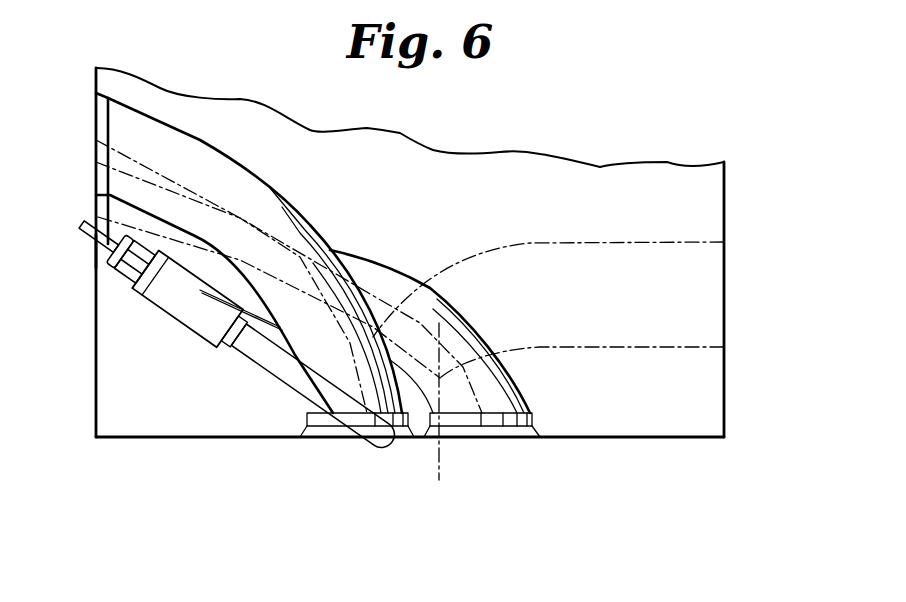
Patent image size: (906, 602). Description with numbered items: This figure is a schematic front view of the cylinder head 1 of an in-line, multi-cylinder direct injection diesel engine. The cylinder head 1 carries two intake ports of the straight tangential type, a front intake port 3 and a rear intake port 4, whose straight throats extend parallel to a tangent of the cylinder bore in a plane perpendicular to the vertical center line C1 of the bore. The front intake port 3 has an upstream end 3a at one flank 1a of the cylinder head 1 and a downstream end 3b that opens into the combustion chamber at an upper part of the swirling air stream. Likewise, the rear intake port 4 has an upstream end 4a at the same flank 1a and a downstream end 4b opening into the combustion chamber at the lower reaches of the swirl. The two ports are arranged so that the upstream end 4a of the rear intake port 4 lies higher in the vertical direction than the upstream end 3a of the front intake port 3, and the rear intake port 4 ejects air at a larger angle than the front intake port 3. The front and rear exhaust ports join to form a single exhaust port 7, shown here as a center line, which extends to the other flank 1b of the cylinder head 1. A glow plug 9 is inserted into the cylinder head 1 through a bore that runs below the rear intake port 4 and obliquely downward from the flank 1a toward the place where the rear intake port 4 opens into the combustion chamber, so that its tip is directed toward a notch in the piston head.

The cylinder head 1 is at (713, 197).
The flank 1a is at (96, 380).
The flank 1b is at (724, 408).
The front intake port 3 is at (436, 305).
The upstream end 3a is at (95, 250).
The downstream end 3b is at (492, 437).
The rear intake port 4 is at (303, 228).
The upstream end 4a is at (96, 111).
The downstream end 4b is at (320, 437).
The single exhaust port 7 is at (638, 238).
The glow plug 9 is at (218, 322).
The vertical center line C1 is at (442, 468).